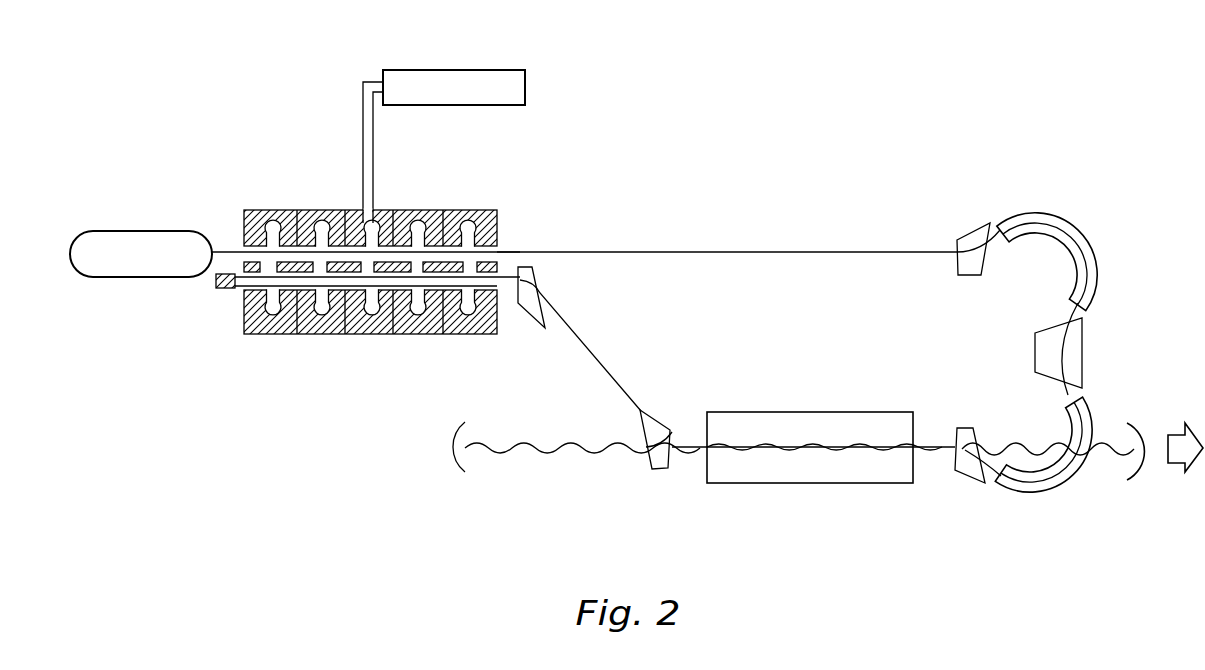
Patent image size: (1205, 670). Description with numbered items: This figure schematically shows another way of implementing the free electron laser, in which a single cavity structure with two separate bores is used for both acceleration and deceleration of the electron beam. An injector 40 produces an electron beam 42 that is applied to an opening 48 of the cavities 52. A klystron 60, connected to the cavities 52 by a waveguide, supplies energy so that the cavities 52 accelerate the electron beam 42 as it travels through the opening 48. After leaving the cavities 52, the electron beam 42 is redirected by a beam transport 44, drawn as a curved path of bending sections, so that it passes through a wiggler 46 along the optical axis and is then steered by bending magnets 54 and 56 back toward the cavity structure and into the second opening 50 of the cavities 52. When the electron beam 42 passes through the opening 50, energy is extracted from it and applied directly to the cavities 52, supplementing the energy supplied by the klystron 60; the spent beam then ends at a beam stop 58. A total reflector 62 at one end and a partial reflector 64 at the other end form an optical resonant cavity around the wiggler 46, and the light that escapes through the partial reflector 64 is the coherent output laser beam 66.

The injector 40 is at (165, 230).
The electron beam 42 is at (786, 251).
The beam transport 44 is at (1084, 242).
The wiggler 46 is at (820, 484).
The opening 48 is at (506, 249).
The opening 50 is at (500, 287).
The cavities 52 is at (318, 209).
The bending magnet 54 is at (660, 424).
The bending magnet 56 is at (579, 339).
The beam stop 58 is at (230, 289).
The klystron 60 is at (500, 70).
The total reflector 62 is at (460, 462).
The partial reflector 64 is at (1132, 430).
The coherent output laser beam 66 is at (1172, 464).